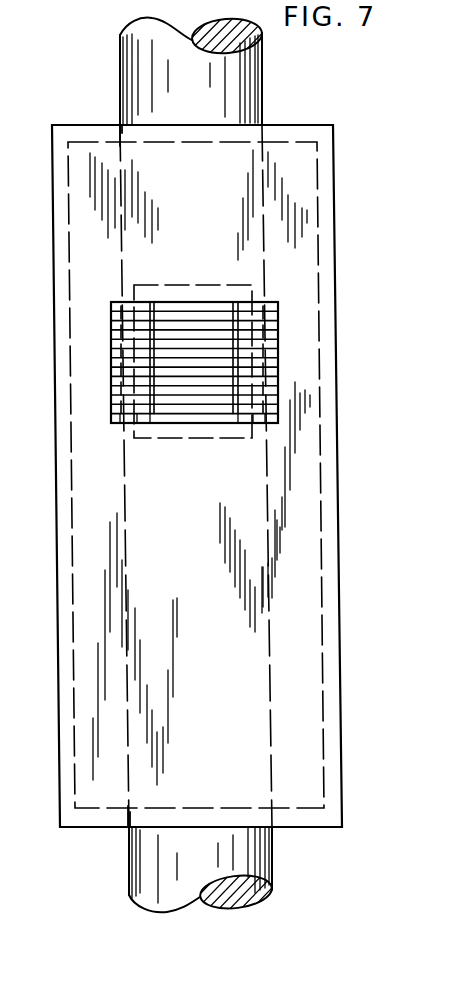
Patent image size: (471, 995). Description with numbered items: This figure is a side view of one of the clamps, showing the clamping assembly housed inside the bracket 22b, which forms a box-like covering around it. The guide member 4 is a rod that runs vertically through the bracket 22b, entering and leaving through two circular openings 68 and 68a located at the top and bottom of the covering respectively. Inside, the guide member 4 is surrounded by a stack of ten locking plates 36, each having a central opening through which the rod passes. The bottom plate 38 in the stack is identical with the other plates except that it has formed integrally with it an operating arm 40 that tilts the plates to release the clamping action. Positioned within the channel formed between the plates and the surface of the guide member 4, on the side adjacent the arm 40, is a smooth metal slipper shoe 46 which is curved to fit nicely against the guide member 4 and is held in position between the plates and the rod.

The guide member 4 is at (242, 95).
The bracket 22b is at (330, 641).
The locking plates 36 is at (268, 345).
The bottom plate 38 is at (120, 423).
The operating arm 40 is at (213, 413).
The slipper shoe 46 is at (177, 404).
The circular opening 68 is at (119, 129).
The circular opening 68a is at (124, 811).